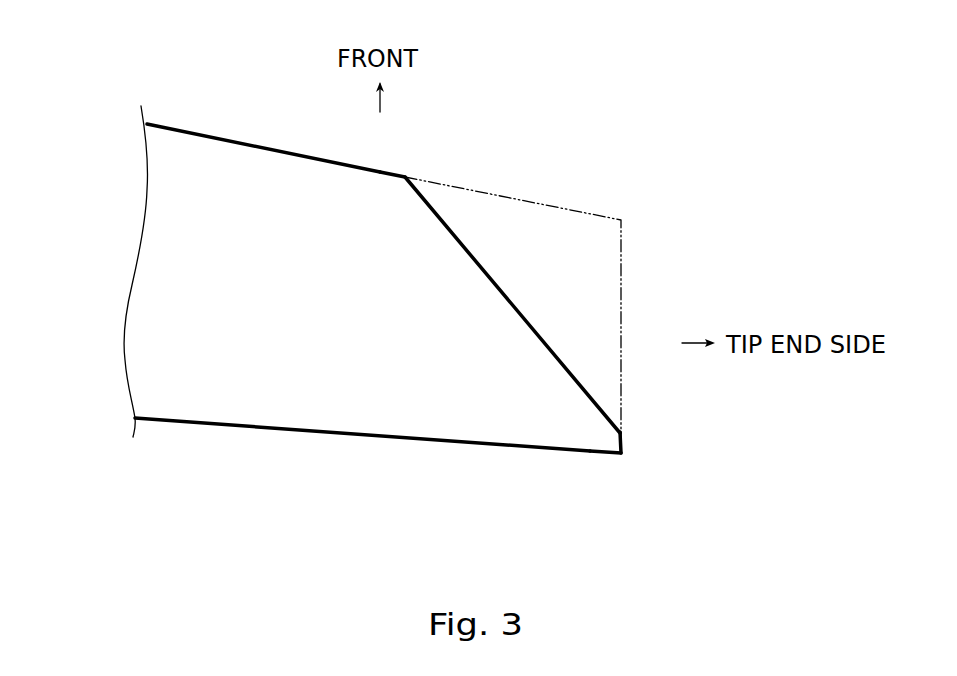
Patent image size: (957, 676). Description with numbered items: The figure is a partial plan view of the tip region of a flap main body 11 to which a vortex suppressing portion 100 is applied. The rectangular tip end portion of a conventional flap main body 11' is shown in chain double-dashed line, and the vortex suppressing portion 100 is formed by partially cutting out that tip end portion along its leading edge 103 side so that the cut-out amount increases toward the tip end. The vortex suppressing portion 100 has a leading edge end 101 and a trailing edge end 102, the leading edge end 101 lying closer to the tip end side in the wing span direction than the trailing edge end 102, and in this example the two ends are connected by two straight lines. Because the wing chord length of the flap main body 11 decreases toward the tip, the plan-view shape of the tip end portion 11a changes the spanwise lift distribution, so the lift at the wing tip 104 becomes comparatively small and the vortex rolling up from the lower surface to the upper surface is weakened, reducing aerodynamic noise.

The flap main body 11 is at (95, 271).
The flap main body of Conventional Example 11' is at (582, 315).
The tip end portion 11a is at (190, 423).
The vortex suppressing portion 100 is at (528, 427).
The leading edge end 101 is at (405, 177).
The trailing edge end 102 is at (621, 455).
The leading edge 103 is at (247, 140).
The wing tip 104 is at (622, 440).